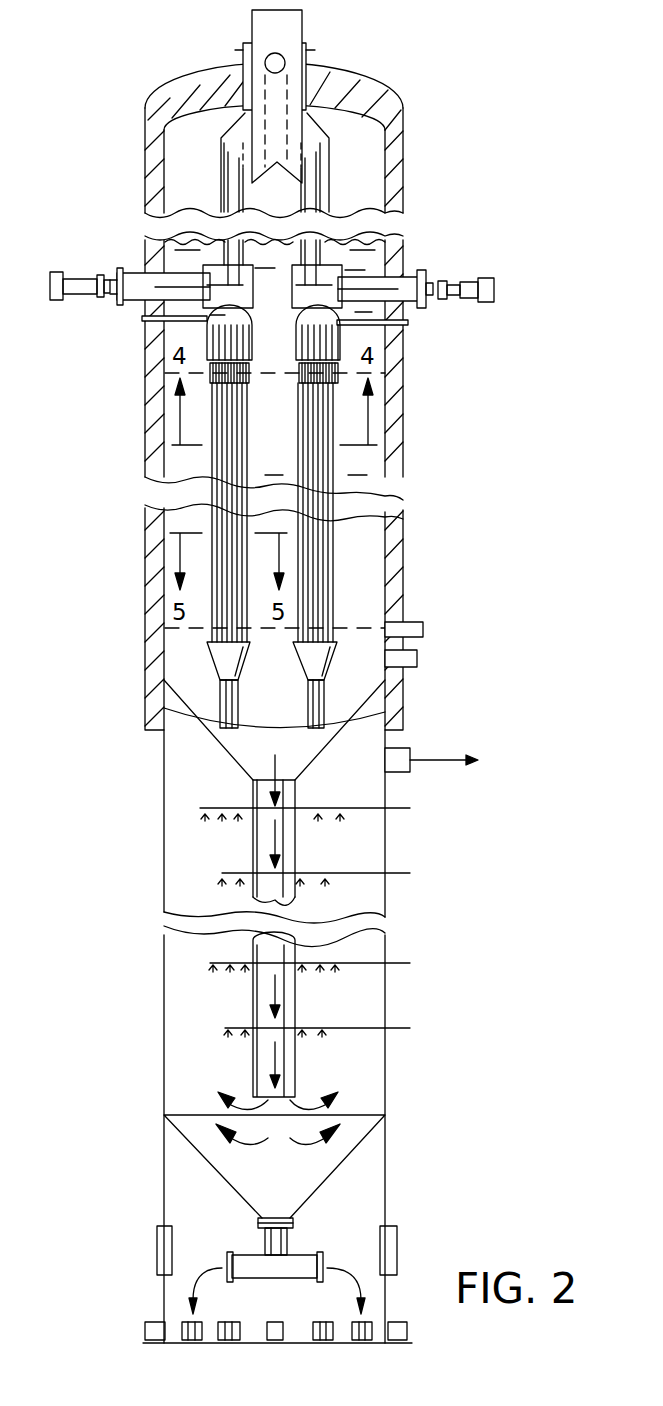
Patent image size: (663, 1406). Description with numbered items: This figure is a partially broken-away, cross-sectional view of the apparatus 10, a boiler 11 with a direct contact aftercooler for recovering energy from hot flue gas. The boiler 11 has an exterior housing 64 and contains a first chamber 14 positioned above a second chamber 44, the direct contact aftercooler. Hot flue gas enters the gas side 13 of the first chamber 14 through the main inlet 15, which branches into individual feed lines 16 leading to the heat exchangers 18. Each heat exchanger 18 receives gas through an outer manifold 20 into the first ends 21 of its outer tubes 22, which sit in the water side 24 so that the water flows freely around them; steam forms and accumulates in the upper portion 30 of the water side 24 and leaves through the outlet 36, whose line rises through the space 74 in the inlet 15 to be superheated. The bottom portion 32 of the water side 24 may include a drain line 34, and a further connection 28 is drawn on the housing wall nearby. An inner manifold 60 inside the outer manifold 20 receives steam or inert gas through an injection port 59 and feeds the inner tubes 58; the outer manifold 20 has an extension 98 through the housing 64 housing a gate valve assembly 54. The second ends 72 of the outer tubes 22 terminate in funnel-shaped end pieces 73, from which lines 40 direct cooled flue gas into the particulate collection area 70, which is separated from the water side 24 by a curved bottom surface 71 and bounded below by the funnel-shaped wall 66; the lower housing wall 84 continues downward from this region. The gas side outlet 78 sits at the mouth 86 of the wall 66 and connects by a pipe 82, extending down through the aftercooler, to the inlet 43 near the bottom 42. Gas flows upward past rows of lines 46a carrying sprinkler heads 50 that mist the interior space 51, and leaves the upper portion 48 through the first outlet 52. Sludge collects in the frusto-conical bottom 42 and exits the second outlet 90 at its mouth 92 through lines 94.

The apparatus 10 is at (138, 585).
The boiler 11 is at (303, 703).
The gas side 13 is at (327, 528).
The first chamber 14 is at (138, 382).
The inlet 15 is at (252, 36).
The feed lines 16 is at (318, 182).
The heat exchangers 18 is at (212, 522).
The outer manifold 20 is at (302, 296).
The first ends 21 is at (207, 376).
The outer tubes 22 is at (298, 422).
The water side 24 is at (372, 467).
The nozzle 28 is at (405, 625).
The upper portion 30 is at (215, 148).
The bottom portion 32 is at (350, 695).
The drain line 34 is at (417, 657).
The outlet 36 is at (285, 63).
The lines 40 is at (312, 706).
The bottom 42 is at (280, 1210).
The inlet 43 is at (302, 1090).
The second chamber 44 is at (157, 834).
The lines 46a is at (395, 870).
The upper portion 48 is at (378, 796).
The sprinkler heads 50 is at (230, 820).
The interior space 51 is at (213, 1019).
The first outlet 52 is at (443, 777).
The gate valve assembly 54 is at (108, 273).
The inner tubes 58 is at (219, 455).
The injection port 59 is at (142, 322).
The inner manifold 60 is at (303, 318).
The exterior housing 64 is at (147, 442).
The bottom surface 66 is at (373, 716).
The particulate collection area 70 is at (305, 742).
The bottom surface 71 is at (265, 728).
The second ends 72 is at (248, 645).
The end piece 73 is at (218, 660).
The space 74 is at (378, 97).
The outlet 78 is at (298, 779).
The pipe 82 is at (290, 987).
The wall 84 is at (148, 722).
The mouth 86 is at (262, 782).
The second outlet 90 is at (293, 1223).
The mouth 92 is at (270, 1217).
The lines 94 is at (277, 1291).
The extension 98 is at (130, 272).